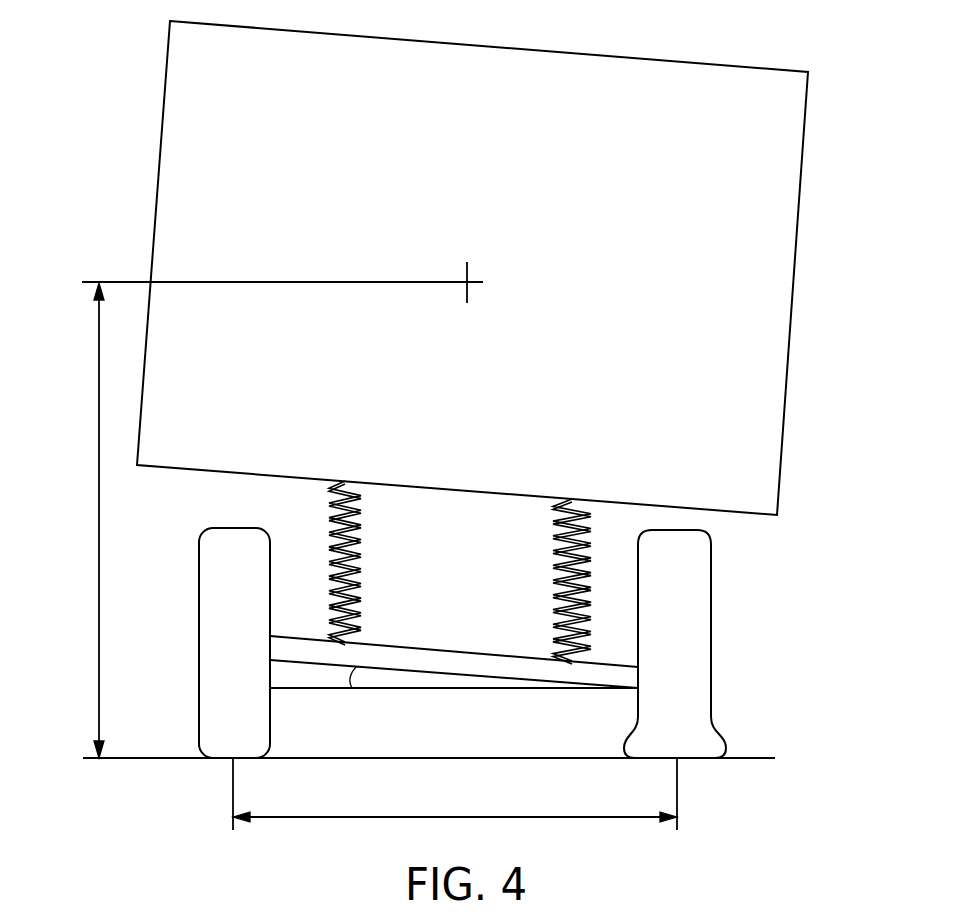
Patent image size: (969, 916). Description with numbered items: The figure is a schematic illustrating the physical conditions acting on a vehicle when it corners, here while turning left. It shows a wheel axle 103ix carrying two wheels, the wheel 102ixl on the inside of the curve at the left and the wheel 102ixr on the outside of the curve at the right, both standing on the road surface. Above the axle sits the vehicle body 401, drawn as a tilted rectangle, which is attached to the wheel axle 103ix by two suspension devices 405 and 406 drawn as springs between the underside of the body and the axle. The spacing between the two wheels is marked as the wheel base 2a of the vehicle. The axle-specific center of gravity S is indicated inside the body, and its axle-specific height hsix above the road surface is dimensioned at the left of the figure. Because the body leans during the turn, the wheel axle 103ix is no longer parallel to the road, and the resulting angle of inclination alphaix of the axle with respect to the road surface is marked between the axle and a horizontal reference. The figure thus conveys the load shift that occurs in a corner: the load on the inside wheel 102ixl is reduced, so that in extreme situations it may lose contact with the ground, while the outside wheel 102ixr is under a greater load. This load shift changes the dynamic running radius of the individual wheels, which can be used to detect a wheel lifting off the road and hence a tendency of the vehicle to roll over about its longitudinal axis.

The vehicle body 401 is at (768, 318).
The suspension device 405 is at (362, 542).
The suspension device 406 is at (557, 590).
The wheel axle 103ix is at (428, 662).
The wheel 102ixl is at (208, 630).
The wheel 102ixr is at (697, 632).
The axle-specific center of gravity S is at (288, 272).
The axle-specific height of the center of gravity hsix is at (68, 520).
The angle of inclination alphaix is at (360, 678).
The wheel base 2a is at (455, 794).